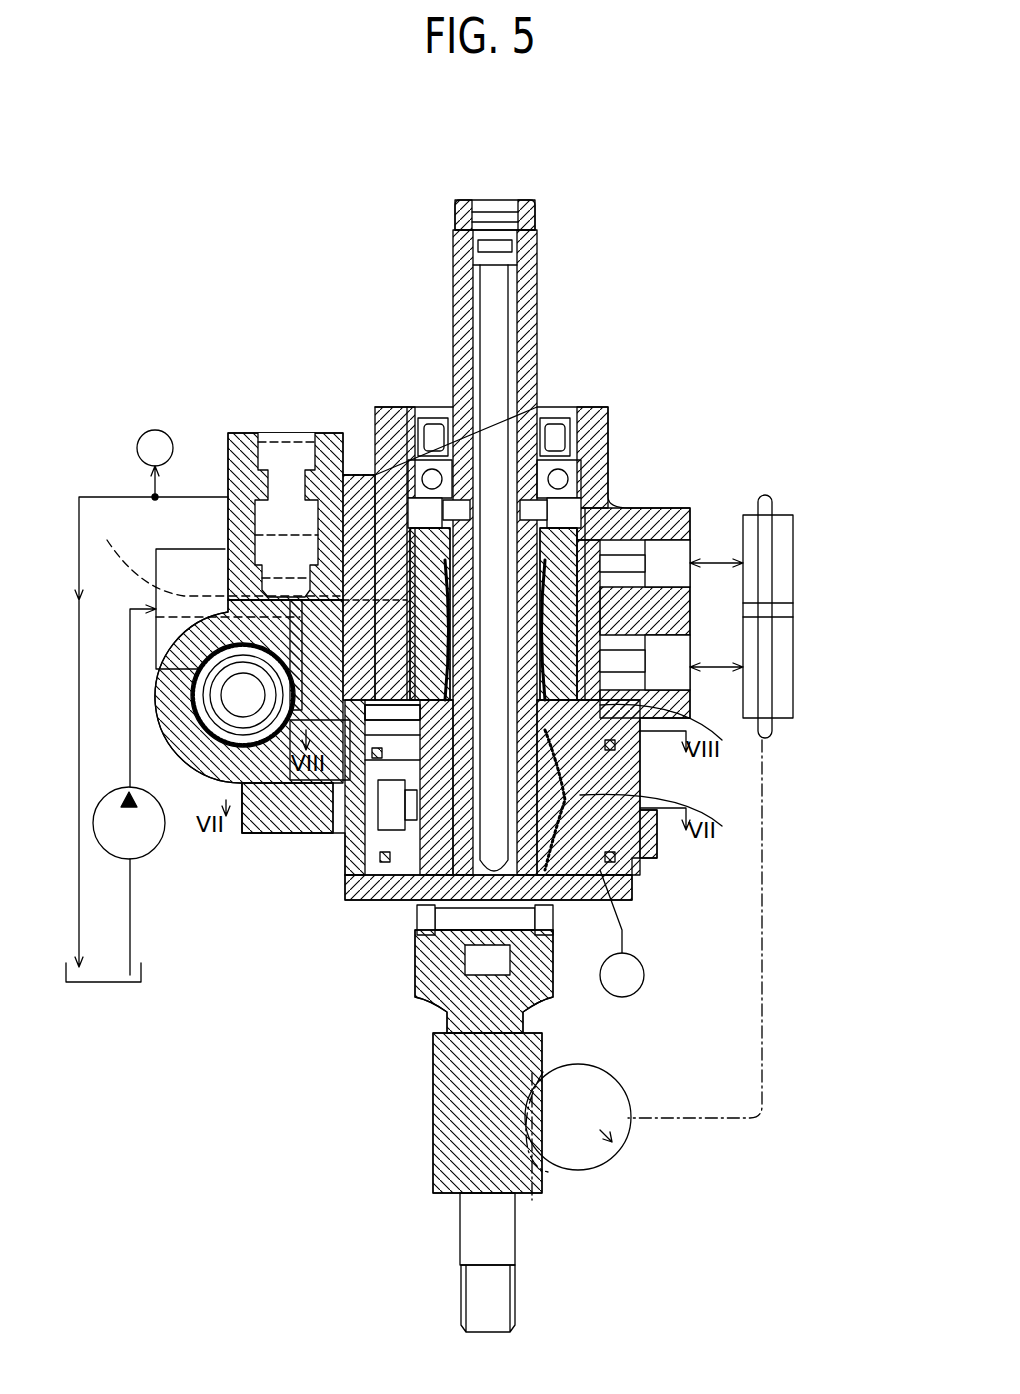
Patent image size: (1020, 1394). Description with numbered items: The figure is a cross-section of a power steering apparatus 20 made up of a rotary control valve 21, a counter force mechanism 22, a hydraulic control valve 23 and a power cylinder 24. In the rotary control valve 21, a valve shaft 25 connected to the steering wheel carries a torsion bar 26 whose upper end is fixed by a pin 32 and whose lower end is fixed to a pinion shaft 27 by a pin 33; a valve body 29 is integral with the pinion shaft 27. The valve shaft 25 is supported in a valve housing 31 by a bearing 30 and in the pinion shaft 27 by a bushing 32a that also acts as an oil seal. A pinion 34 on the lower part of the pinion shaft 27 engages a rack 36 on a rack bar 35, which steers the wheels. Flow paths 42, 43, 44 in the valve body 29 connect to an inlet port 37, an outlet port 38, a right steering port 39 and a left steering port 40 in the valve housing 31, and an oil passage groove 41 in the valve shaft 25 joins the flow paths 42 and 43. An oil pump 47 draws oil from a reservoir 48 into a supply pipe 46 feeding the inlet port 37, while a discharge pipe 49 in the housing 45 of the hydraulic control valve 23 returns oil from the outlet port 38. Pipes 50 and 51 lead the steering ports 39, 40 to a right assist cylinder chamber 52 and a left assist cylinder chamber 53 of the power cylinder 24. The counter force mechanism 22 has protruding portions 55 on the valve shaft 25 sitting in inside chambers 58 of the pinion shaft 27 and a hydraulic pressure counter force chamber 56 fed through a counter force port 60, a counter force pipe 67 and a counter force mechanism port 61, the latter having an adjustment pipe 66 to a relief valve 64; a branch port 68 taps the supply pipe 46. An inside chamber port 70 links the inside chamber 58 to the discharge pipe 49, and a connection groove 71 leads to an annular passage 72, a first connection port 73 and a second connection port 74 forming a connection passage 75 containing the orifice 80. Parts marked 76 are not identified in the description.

The power steering apparatus 20 is at (210, 224).
The rotary control valve 21 is at (576, 384).
The counter force mechanism 22 is at (408, 905).
The hydraulic control valve 23 is at (245, 820).
The power cylinder 24 is at (790, 516).
The valve shaft 25 is at (537, 330).
The torsion bar 26 is at (500, 348).
The pinion shaft 27 is at (700, 812).
The valve body 29 is at (575, 485).
The bearing 30 is at (412, 440).
The valve housing 31 is at (610, 410).
The pin 32 is at (530, 222).
The bushing 32a is at (530, 935).
The pin 33 is at (417, 936).
The pinion 34 is at (433, 1137).
The rack bar 35 is at (771, 735).
The rack 36 is at (535, 1195).
The inlet port 37 is at (355, 600).
The outlet port 38 is at (352, 445).
The right steering port 39 is at (684, 548).
The left steering port 40 is at (684, 665).
The oil passage groove 41 is at (586, 617).
The flow path 42 is at (608, 530).
The flow path 43 is at (585, 690).
The flow path 44 is at (582, 642).
The housing 45 is at (226, 450).
The supply pipe 46 is at (160, 612).
The oil pump 47 is at (135, 862).
The reservoir 48 is at (105, 985).
The discharge pipe 49 is at (218, 450).
The pipe 50 is at (712, 565).
The pipe 51 is at (712, 669).
The right assist cylinder chamber 52 is at (793, 572).
The left assist cylinder chamber 53 is at (793, 682).
The protruding portion 55 is at (640, 850).
The hydraulic pressure counter force chamber 56 is at (368, 900).
The inside chamber 58 is at (600, 905).
The counter force port 60 is at (287, 825).
The counter force mechanism port 61 is at (280, 764).
The relief valve 64 is at (280, 450).
The adjustment pipe 66 is at (294, 660).
The counter force pipe 67 is at (262, 838).
The branch port 68 is at (160, 672).
The inside chamber port 70 is at (578, 900).
The connection groove 71 is at (616, 782).
The annular passage 72 is at (690, 742).
The first connection port 73 is at (362, 895).
The second connection port 74 is at (240, 822).
The connection passage 75 is at (385, 710).
The seal ring 76 is at (383, 752).
The orifice 80 is at (295, 690).